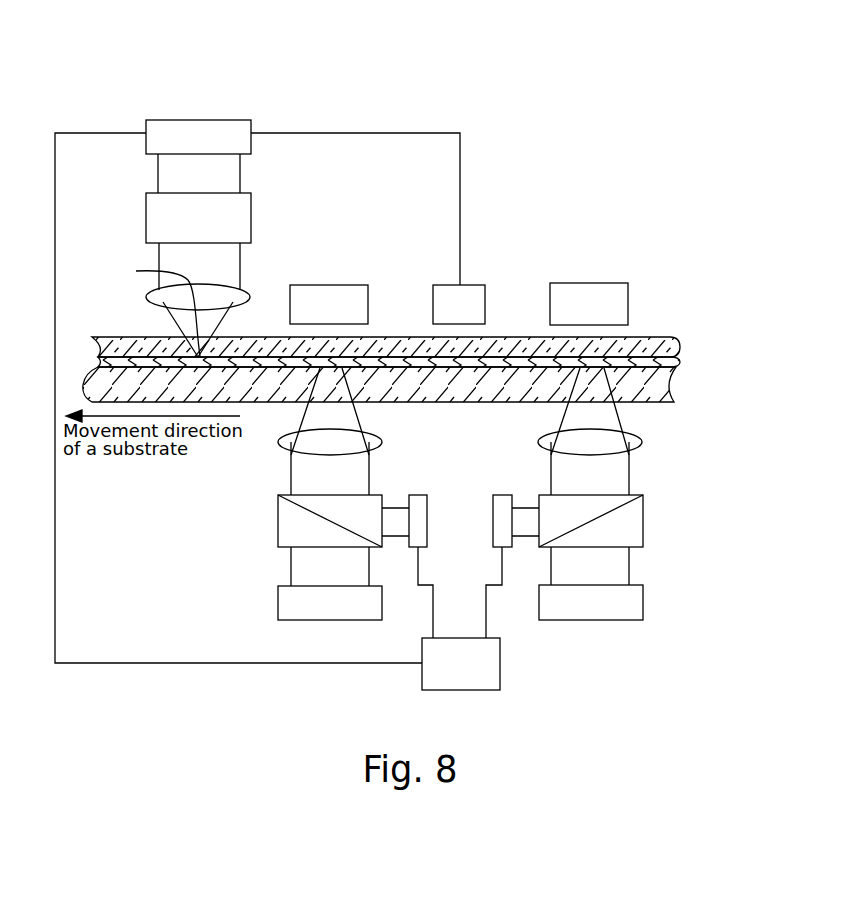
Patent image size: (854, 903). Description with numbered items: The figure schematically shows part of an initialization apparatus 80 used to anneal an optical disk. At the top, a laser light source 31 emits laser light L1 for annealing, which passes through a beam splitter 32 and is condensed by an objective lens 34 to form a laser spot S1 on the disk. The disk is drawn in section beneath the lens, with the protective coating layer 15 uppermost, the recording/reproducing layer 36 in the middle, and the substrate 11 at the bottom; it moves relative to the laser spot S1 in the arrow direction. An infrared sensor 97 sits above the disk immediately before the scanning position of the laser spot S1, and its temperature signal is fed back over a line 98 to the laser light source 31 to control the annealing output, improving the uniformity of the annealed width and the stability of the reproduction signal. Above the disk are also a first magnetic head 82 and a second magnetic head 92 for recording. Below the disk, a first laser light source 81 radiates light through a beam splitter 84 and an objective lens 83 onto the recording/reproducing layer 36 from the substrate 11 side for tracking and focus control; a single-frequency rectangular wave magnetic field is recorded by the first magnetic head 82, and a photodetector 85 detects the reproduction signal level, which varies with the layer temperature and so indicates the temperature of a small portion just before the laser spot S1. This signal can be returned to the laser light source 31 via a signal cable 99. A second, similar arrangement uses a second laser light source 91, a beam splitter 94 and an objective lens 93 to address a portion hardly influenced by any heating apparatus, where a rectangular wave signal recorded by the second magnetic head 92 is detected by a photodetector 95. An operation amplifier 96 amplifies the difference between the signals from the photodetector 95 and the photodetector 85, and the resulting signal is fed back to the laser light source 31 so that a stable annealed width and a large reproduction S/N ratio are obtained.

The initialization apparatus 80 is at (88, 73).
The laser light source 31 is at (217, 120).
The laser light L1 is at (240, 172).
The beam splitter 32 is at (252, 216).
The objective lens 34 is at (236, 300).
The laser spot S1 is at (150, 306).
The wiring 98 is at (432, 133).
The first magnetic head 82 is at (338, 285).
The infrared sensor 97 is at (472, 285).
The second magnetic head 92 is at (592, 283).
The protective coating layer 15 is at (683, 343).
The recording/reproducing layer 36 is at (683, 361).
The substrate 11 is at (662, 385).
The objective lens 83 is at (285, 440).
The beam splitter 84 is at (278, 518).
The photodetector 85 is at (418, 495).
The first laser light source 81 is at (278, 603).
The objective lens 93 is at (640, 440).
The beam splitter 94 is at (643, 518).
The photodetector 95 is at (503, 495).
The second laser light source 91 is at (643, 603).
The operation amplifier 96 is at (500, 662).
The signal cable 99 is at (121, 663).